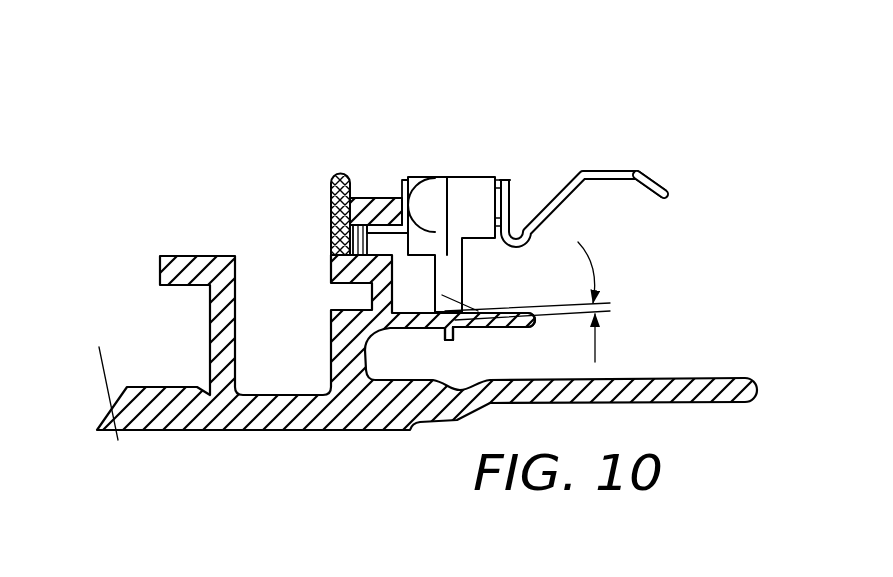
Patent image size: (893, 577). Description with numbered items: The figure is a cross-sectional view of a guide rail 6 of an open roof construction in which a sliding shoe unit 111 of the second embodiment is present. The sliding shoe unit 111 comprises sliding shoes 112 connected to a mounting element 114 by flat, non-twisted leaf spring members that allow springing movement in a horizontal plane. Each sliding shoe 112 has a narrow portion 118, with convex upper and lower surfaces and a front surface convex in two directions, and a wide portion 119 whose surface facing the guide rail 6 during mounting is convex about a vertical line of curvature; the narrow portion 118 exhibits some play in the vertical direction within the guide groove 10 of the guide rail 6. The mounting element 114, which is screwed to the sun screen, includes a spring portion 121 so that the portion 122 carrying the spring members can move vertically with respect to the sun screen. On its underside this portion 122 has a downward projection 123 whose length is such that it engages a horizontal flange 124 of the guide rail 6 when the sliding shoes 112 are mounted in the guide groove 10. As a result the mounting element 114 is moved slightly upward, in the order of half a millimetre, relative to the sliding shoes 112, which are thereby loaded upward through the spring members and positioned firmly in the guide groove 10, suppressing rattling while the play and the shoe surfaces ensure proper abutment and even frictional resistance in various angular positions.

The guide rail 6 is at (183, 190).
The guide groove 10 is at (330, 250).
The sliding shoe unit 111 is at (590, 123).
The sliding shoe 112 is at (400, 182).
The mounting element 114 is at (613, 168).
The narrow portion 118 is at (378, 240).
The wide portion 119 is at (420, 178).
The spring portion 121 is at (562, 188).
The portion to which the spring members are attached 122 is at (477, 190).
The downward projection 123 is at (490, 328).
The horizontal flange 124 is at (455, 338).